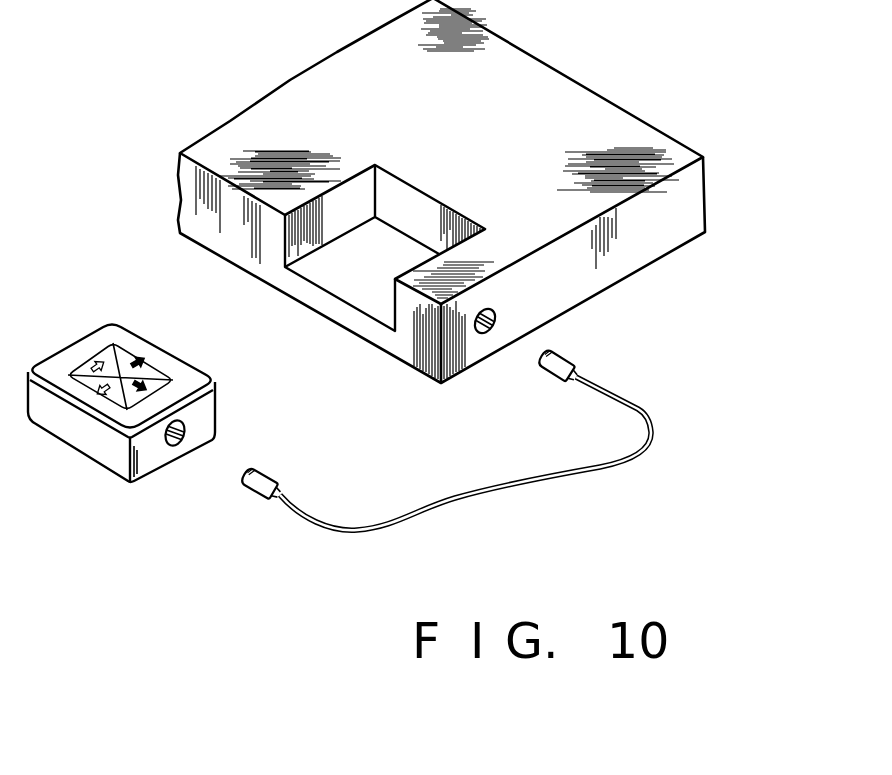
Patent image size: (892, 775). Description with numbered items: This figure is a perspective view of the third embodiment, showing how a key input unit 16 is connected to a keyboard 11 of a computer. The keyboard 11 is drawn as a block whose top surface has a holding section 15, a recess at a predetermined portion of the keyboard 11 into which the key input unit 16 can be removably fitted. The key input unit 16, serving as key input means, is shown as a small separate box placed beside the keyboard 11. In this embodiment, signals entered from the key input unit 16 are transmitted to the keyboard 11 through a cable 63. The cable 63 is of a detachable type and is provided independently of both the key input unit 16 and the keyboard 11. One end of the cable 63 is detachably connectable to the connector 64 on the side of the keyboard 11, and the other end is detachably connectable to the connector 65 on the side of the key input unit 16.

The keyboard 11 is at (590, 91).
The holding section 15 is at (365, 311).
The key input unit 16 is at (73, 347).
The cable 63 is at (497, 486).
The connector of the keyboard 64 is at (496, 313).
The connector of the key input unit 65 is at (178, 447).